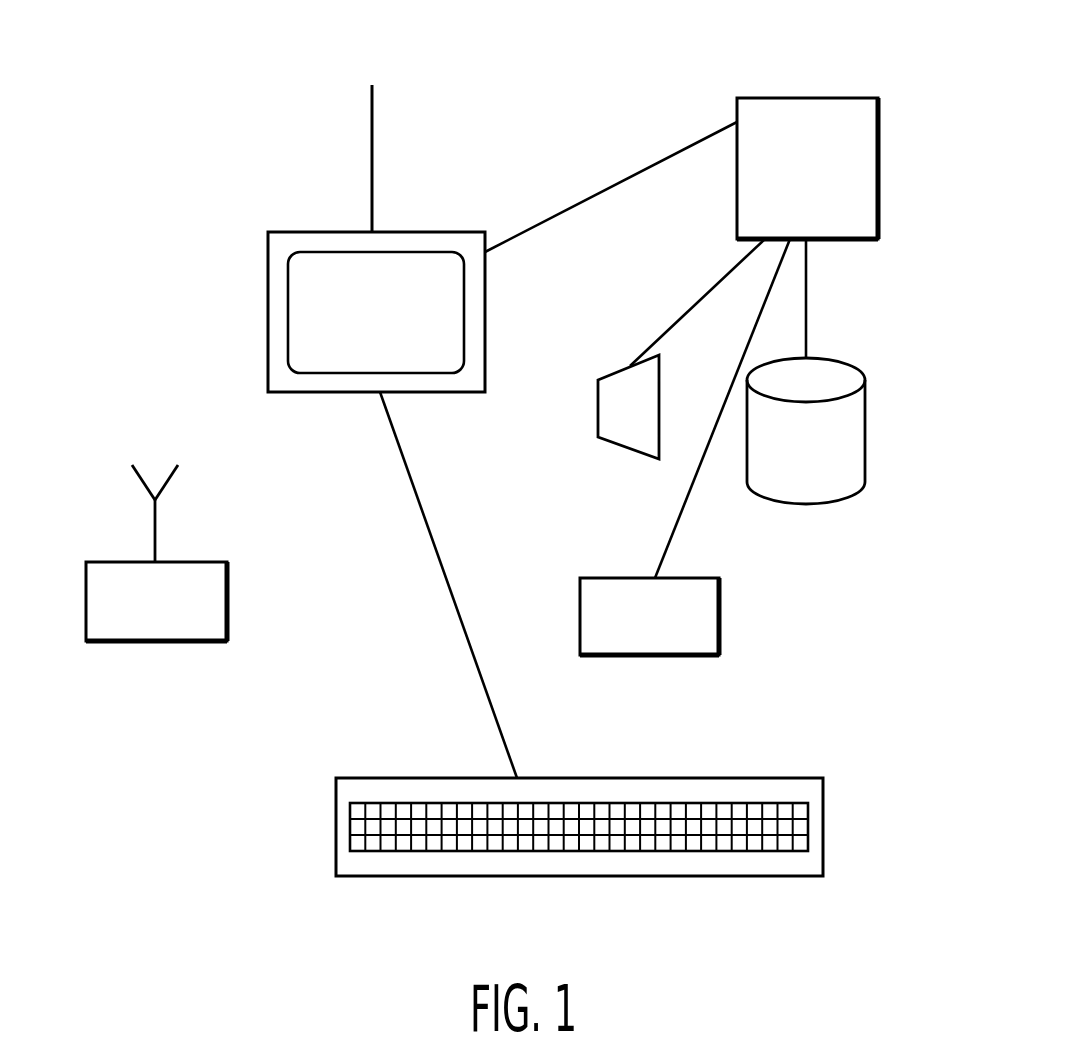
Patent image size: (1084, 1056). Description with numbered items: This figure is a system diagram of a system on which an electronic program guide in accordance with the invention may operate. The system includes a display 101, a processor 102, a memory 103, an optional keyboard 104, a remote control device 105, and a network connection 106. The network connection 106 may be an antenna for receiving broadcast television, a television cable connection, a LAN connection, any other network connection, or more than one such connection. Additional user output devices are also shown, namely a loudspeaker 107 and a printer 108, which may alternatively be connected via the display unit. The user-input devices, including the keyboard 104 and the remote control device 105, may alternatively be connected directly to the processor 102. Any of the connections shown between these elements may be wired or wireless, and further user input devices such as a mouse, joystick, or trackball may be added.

The display 101 is at (450, 232).
The processor 102 is at (825, 98).
The memory 103 is at (848, 495).
The keyboard 104 is at (336, 812).
The remote control device 105 is at (228, 605).
The network connection 106 is at (372, 142).
The loudspeaker 107 is at (612, 443).
The printer 108 is at (719, 614).